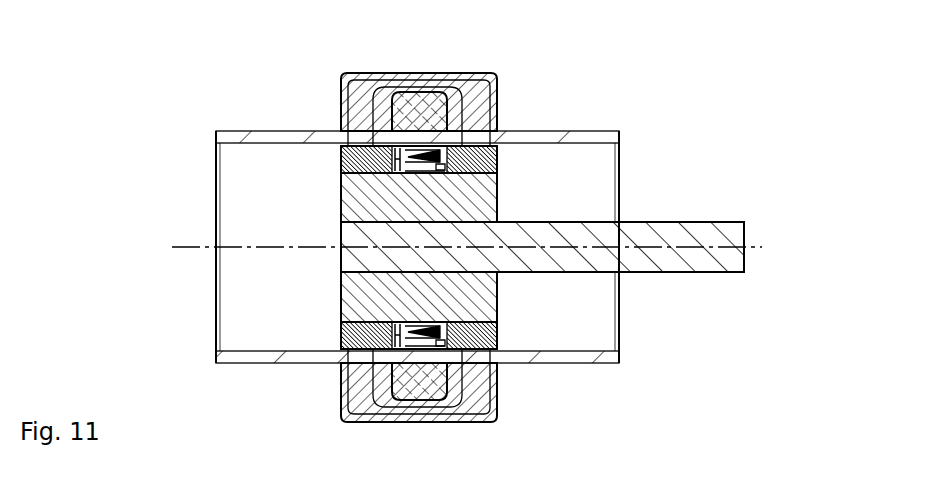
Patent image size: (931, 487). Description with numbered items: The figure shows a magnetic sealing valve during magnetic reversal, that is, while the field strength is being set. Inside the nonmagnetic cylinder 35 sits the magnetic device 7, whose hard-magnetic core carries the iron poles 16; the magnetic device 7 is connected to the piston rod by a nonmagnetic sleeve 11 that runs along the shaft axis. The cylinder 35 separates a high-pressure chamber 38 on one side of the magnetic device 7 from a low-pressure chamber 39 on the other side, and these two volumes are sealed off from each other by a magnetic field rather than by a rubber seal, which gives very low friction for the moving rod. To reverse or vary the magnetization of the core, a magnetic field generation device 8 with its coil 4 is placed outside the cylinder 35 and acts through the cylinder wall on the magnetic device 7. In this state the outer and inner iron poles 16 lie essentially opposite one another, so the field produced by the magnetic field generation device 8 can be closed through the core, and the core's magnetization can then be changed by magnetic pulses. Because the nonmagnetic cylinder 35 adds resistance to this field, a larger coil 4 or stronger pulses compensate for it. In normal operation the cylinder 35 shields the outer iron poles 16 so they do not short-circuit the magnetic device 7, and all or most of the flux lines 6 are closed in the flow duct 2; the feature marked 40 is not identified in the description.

The flow duct 2 is at (498, 145).
The coil 4 is at (425, 76).
The flux lines 6 is at (371, 79).
The magnetic device 7 is at (510, 183).
The magnetic field generation device 8 is at (448, 227).
The nonmagnetic sleeve 11 is at (341, 193).
The iron poles 16 is at (341, 73).
The cylinder 35 is at (240, 131).
The high-pressure chamber 38 is at (245, 317).
The low-pressure chamber 39 is at (590, 322).
The tube wall underside 40 is at (335, 367).